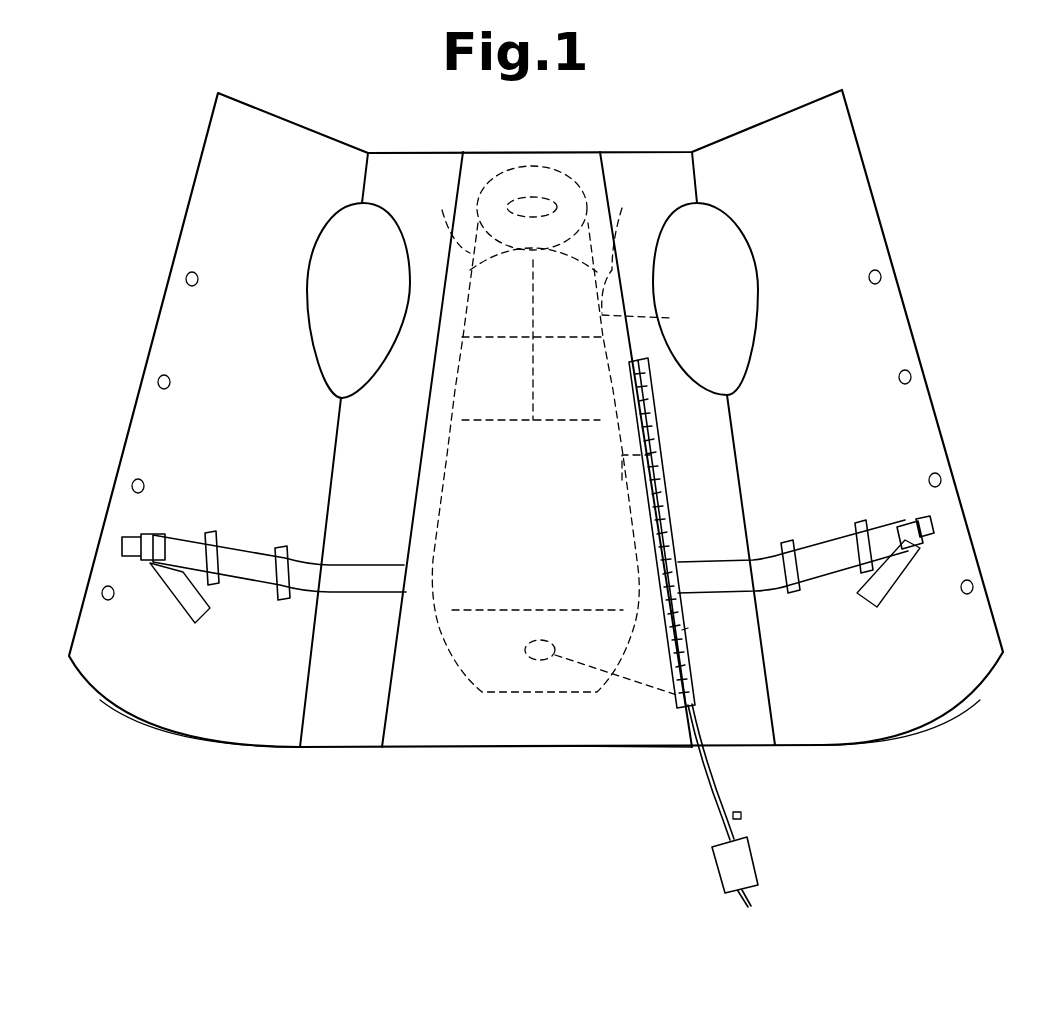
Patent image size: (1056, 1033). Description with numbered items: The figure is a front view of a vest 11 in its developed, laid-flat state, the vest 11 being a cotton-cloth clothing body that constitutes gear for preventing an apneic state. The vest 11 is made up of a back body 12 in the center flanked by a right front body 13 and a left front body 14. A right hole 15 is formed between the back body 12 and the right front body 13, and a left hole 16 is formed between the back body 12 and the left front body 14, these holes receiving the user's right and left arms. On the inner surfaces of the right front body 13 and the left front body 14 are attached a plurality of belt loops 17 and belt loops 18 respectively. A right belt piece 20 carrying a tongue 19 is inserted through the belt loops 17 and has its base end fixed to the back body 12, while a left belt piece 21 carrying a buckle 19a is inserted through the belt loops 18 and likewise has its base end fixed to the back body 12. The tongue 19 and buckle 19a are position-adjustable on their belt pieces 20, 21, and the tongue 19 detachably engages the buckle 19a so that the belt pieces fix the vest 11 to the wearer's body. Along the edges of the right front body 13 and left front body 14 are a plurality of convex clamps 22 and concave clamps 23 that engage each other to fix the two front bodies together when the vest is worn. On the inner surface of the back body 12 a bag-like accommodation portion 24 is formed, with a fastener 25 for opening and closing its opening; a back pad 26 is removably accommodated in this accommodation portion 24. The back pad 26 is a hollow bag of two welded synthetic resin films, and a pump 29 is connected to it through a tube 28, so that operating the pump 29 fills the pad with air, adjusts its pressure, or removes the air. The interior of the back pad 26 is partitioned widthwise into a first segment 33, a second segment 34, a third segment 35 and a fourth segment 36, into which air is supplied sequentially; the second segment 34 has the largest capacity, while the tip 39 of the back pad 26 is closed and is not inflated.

The vest 11 is at (899, 164).
The back body 12 is at (500, 737).
The right front body 13 is at (175, 733).
The left front body 14 is at (895, 722).
The right hole 15 is at (318, 335).
The left hole 16 is at (748, 340).
The belt loops 17 is at (287, 542).
The belt loops 18 is at (870, 522).
The tongue 19 is at (122, 540).
The buckle 19a is at (930, 525).
The right belt piece 20 is at (243, 575).
The left belt piece 21 is at (827, 573).
The convex clamps 22 is at (102, 593).
The concave clamps 23 is at (973, 587).
The accommodation portion 24 is at (590, 735).
The fastener 25 is at (685, 632).
The back pad 26 is at (437, 216).
The tube 28 is at (722, 773).
The pump 29 is at (750, 857).
The first segment 33 is at (593, 690).
The second segment 34 is at (665, 462).
The third segment 35 is at (656, 300).
The fourth segment 36 is at (628, 210).
The tip 39 is at (573, 180).